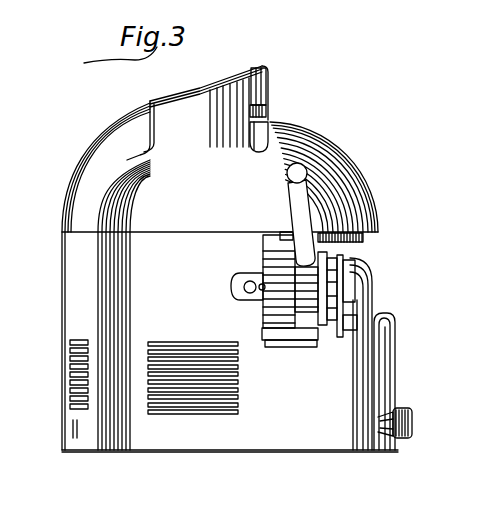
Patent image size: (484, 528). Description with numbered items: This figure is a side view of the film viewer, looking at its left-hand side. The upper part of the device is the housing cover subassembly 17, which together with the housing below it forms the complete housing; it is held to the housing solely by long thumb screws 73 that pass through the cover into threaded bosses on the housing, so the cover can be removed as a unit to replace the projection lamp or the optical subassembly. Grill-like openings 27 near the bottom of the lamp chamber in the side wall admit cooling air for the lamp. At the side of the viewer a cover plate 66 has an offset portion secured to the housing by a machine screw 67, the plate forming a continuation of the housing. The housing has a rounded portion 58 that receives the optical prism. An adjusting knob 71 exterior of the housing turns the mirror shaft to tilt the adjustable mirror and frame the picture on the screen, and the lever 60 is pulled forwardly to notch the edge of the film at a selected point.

The housing cover subassembly 17 is at (371, 189).
The grill-like openings 27 is at (82, 412).
The rounded portion 58 is at (362, 262).
The lever 60 is at (308, 184).
The cover plate 66 is at (263, 317).
The machine screw 67 is at (245, 287).
The adjusting knob 71 is at (413, 423).
The thumb screws 73 is at (263, 116).